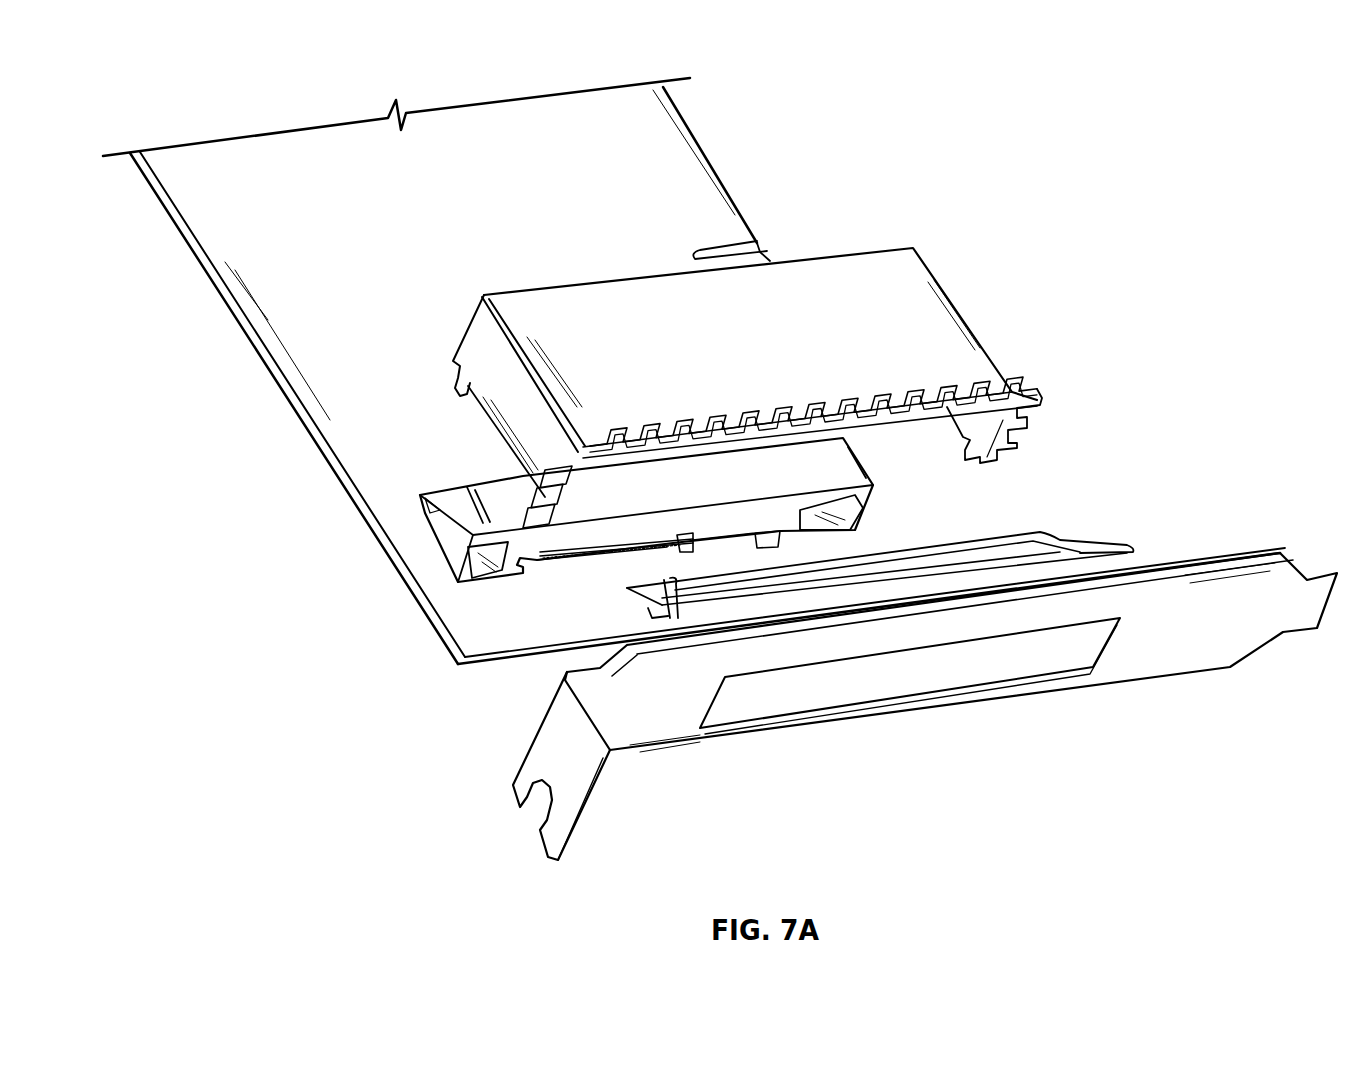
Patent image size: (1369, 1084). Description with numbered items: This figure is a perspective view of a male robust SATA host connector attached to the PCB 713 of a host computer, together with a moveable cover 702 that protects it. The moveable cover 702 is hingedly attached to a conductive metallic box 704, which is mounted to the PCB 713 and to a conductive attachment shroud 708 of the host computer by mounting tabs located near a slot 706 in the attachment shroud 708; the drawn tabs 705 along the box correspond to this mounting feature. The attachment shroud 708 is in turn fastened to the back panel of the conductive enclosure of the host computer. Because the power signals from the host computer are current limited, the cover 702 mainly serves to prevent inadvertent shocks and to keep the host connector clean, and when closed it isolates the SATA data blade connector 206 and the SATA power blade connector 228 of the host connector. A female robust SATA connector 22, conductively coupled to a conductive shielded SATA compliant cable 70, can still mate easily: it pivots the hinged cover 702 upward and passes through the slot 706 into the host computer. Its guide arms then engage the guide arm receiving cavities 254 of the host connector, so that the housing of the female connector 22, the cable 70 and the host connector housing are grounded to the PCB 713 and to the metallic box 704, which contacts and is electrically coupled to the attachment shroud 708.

The PCB 713 is at (668, 152).
The conductive metallic box 704 is at (925, 327).
The flange with tabs 705 is at (645, 418).
The female robust SATA connector 22 is at (657, 532).
The conductive shielded SATA compliant cable 70 is at (487, 492).
The SATA power blade connector 228 is at (596, 548).
The SATA data blade connector 206 is at (722, 537).
The guide arm receiving cavities 254 is at (847, 511).
The moveable cover 702 is at (1065, 535).
The conductive attachment shroud 708 is at (925, 706).
The slot 706 is at (883, 687).